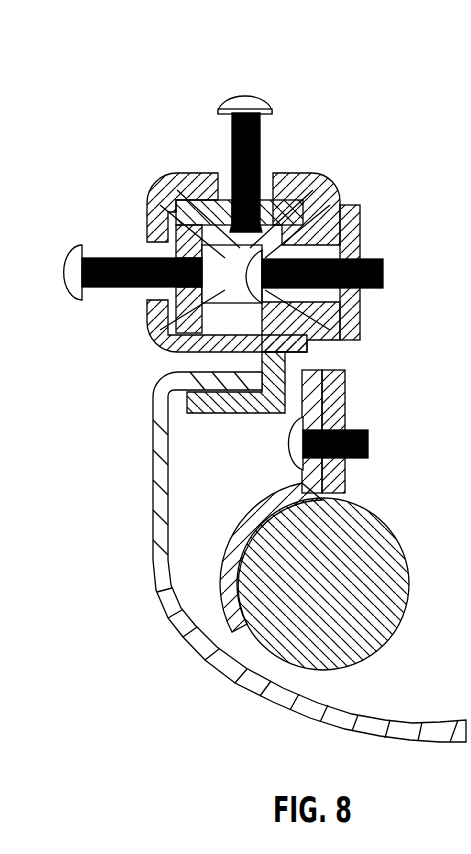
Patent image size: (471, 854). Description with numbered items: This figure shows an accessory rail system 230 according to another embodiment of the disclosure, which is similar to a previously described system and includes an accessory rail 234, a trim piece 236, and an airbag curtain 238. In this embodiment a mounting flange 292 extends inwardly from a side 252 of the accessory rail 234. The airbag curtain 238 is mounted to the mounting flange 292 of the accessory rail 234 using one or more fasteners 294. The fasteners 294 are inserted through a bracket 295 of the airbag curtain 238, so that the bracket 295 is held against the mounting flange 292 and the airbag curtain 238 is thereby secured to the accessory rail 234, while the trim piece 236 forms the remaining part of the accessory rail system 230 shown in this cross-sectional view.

The accessory rail system 230 is at (276, 80).
The accessory rail 234 is at (308, 180).
The side 252 is at (295, 380).
The bracket 295 is at (345, 403).
The fasteners 294 is at (370, 440).
The mounting flange 292 is at (283, 490).
The airbag curtain 238 is at (345, 596).
The trim piece 236 is at (188, 621).